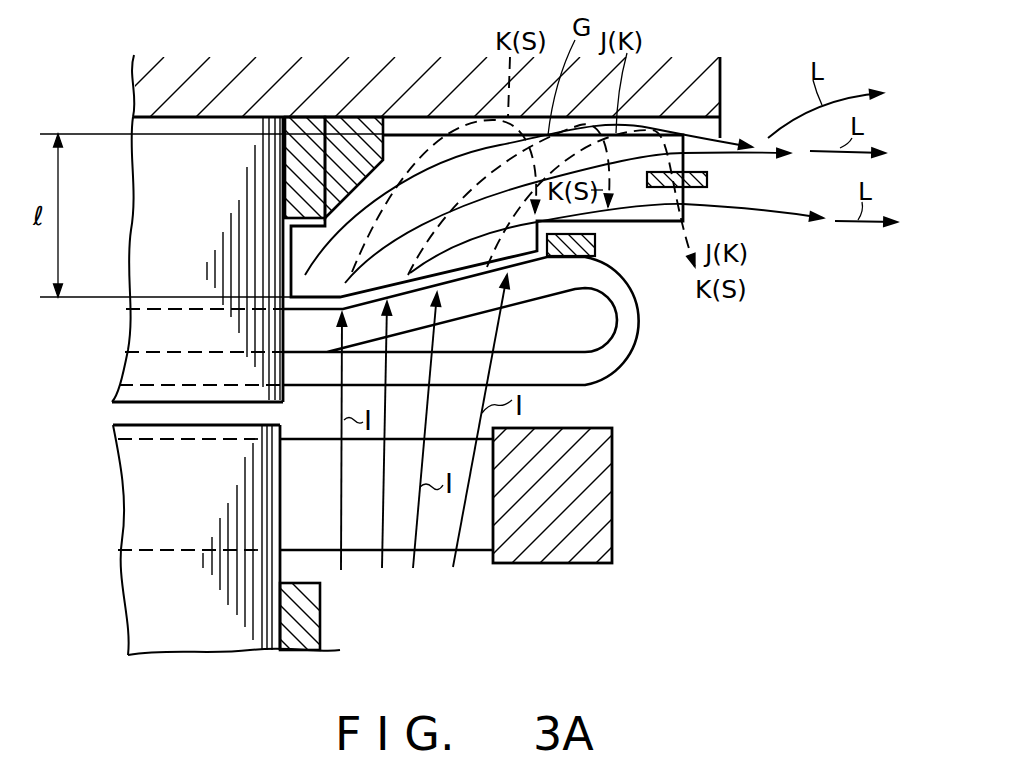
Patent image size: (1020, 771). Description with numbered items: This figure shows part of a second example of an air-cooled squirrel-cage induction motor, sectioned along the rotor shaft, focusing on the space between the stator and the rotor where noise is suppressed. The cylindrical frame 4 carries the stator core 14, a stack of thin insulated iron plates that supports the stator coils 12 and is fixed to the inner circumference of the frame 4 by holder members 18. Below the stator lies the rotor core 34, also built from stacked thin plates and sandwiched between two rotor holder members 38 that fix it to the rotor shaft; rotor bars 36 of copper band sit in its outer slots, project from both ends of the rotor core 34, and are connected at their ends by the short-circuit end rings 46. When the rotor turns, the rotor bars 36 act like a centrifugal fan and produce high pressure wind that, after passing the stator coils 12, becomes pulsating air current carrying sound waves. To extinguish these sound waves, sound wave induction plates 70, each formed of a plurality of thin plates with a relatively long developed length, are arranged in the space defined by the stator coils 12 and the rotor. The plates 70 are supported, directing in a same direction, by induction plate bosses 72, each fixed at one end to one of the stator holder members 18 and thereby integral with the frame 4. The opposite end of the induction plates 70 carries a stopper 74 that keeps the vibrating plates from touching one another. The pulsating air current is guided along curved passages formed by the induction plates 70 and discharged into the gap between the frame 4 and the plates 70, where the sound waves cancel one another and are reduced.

The frame 4 is at (445, 80).
The stator core 14 is at (202, 147).
The holder members 18 is at (303, 125).
The induction plate bosses 72 is at (363, 128).
The sound wave induction plates 70 is at (659, 145).
The stopper 74 is at (708, 178).
The stator coils 12 is at (637, 323).
The rotor core 34 is at (137, 597).
The rotor bars 36 is at (468, 540).
The rotor holder members 38 is at (322, 614).
The end rings 46 is at (612, 487).